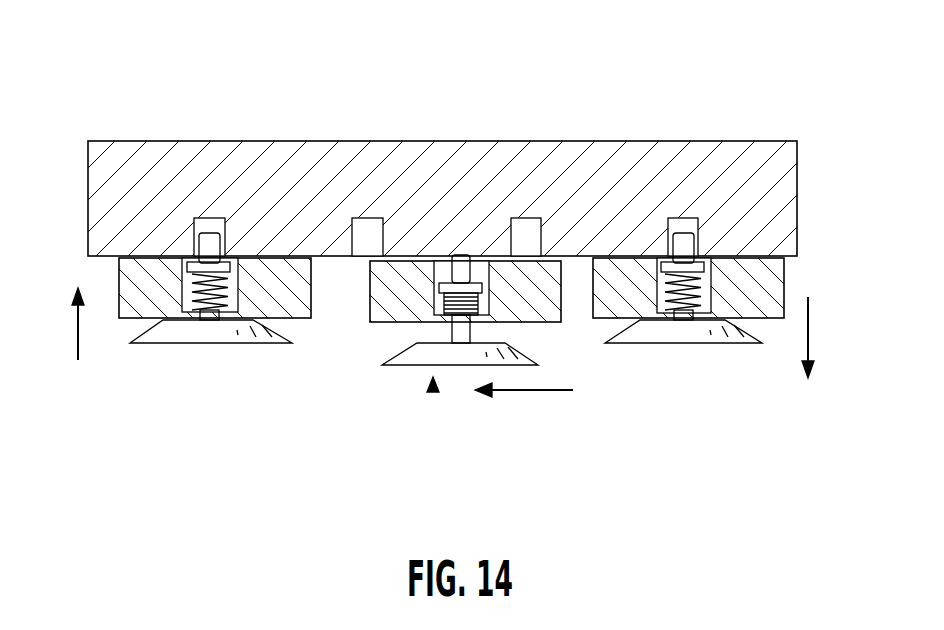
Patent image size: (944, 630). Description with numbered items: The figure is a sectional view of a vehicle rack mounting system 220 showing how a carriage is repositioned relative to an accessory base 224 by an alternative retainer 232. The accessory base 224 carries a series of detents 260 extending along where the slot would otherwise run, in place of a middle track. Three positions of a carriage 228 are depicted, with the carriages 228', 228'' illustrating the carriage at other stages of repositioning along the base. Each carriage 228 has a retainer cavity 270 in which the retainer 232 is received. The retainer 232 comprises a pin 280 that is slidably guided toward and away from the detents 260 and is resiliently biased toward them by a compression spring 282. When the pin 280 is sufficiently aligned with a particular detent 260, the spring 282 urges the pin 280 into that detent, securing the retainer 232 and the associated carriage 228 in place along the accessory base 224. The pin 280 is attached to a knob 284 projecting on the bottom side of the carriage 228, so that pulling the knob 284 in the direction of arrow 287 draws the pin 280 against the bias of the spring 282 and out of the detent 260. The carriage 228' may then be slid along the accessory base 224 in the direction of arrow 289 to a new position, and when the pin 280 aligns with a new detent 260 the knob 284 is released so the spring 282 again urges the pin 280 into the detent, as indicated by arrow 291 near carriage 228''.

The vehicle rack mounting system 220 is at (120, 82).
The accessory base 224 is at (753, 142).
The carriage 228 is at (831, 252).
The carriage 228' is at (329, 415).
The carriage 228'' is at (66, 244).
The retainer 232 is at (432, 390).
The detent 260 is at (208, 231).
The retainer cavity 270 is at (190, 300).
The pin 280 is at (697, 243).
The compression spring 282 is at (252, 297).
The knob 284 is at (220, 344).
The arrow 287 is at (808, 325).
The arrow 289 is at (528, 392).
The arrow 291 is at (78, 335).